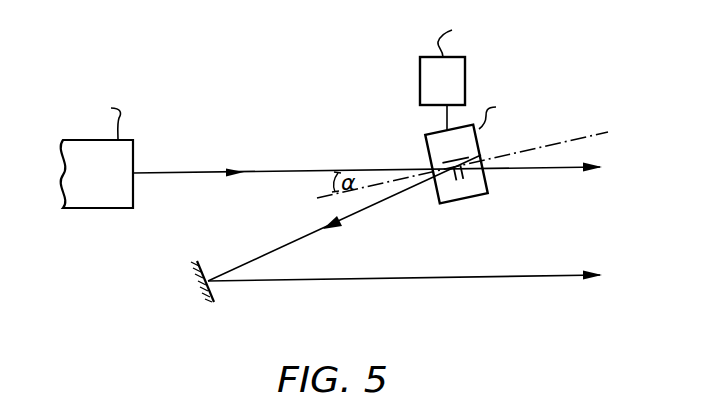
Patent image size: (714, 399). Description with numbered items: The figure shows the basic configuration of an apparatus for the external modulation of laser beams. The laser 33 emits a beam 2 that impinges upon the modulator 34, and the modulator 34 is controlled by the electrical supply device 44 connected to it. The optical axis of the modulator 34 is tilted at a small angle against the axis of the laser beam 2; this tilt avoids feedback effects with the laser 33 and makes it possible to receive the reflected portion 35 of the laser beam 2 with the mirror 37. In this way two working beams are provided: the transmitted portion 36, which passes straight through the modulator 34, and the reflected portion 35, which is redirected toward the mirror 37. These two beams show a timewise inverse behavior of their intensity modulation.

The laser beam 2 is at (366, 160).
The laser 33 is at (108, 188).
The modulator 34 is at (476, 147).
The reflected portion 35 is at (420, 223).
The transmitted portion 36 is at (609, 168).
The mirror 37 is at (199, 286).
The electrical supply device 44 is at (456, 94).